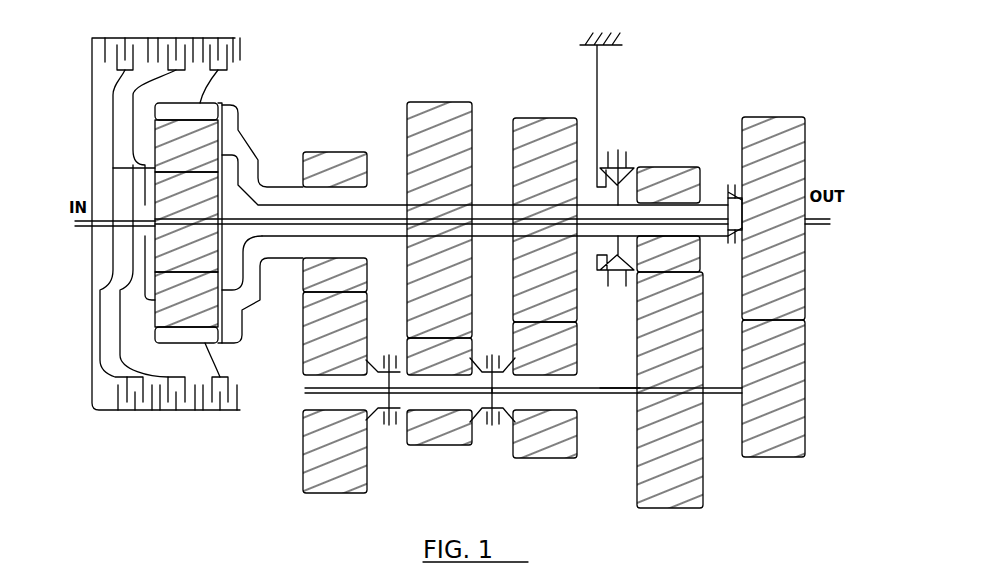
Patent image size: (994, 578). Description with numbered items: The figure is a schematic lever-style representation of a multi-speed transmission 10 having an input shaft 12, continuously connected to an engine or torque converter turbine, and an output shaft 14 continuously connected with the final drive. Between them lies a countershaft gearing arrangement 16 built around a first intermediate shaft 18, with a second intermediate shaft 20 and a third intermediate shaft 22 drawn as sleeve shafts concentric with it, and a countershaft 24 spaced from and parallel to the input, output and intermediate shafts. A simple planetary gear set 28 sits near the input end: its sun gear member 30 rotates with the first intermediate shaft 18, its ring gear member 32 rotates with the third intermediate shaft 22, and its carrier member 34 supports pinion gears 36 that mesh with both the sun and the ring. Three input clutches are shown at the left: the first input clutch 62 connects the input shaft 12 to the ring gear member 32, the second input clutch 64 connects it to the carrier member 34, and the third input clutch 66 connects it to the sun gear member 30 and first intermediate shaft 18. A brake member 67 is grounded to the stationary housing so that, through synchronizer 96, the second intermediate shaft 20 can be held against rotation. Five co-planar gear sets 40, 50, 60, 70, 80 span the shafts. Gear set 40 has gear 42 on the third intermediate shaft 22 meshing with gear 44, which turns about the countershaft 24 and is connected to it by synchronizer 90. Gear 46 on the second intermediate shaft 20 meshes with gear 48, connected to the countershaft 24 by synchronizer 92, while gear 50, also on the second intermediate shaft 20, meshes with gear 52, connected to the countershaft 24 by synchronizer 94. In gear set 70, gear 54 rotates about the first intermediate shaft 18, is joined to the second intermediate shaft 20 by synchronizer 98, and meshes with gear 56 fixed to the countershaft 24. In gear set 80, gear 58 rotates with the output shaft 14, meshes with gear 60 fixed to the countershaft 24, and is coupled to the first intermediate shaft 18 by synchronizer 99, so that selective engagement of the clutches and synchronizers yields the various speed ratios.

The multi-speed transmission 10 is at (708, 86).
The input shaft 12 is at (94, 230).
The output shaft 14 is at (813, 224).
The countershaft gearing arrangement 16 is at (290, 360).
The first intermediate shaft 18 is at (392, 210).
The second intermediate shaft 20 is at (485, 200).
The third intermediate shaft 22 is at (282, 262).
The countershaft 24 is at (610, 395).
The planetary gear set 28 is at (286, 108).
The sun gear member 30 is at (174, 242).
The ring gear member 32 is at (205, 103).
The carrier member 34 is at (113, 168).
The pinion gears 36 is at (174, 157).
The gear set 40 is at (333, 507).
The gear 42 is at (324, 181).
The gear 44 is at (324, 461).
The gear 46 is at (427, 151).
The gear 48 is at (427, 435).
The gear 50 is at (534, 171).
The gear 52 is at (534, 446).
The gear 54 is at (657, 196).
The gear 56 is at (659, 420).
The gear 58 is at (761, 208).
The gear 60 is at (762, 399).
The first input clutch 62 is at (231, 60).
The second input clutch 64 is at (172, 38).
The third input clutch 66 is at (108, 50).
The brake member 67 is at (597, 78).
The gear set 70 is at (665, 523).
The gear set 80 is at (779, 474).
The synchronizer 90 is at (385, 343).
The synchronizer 92 is at (489, 346).
The synchronizer 94 is at (498, 436).
The synchronizer 96 is at (608, 293).
The synchronizer 98 is at (625, 148).
The synchronizer 99 is at (726, 267).